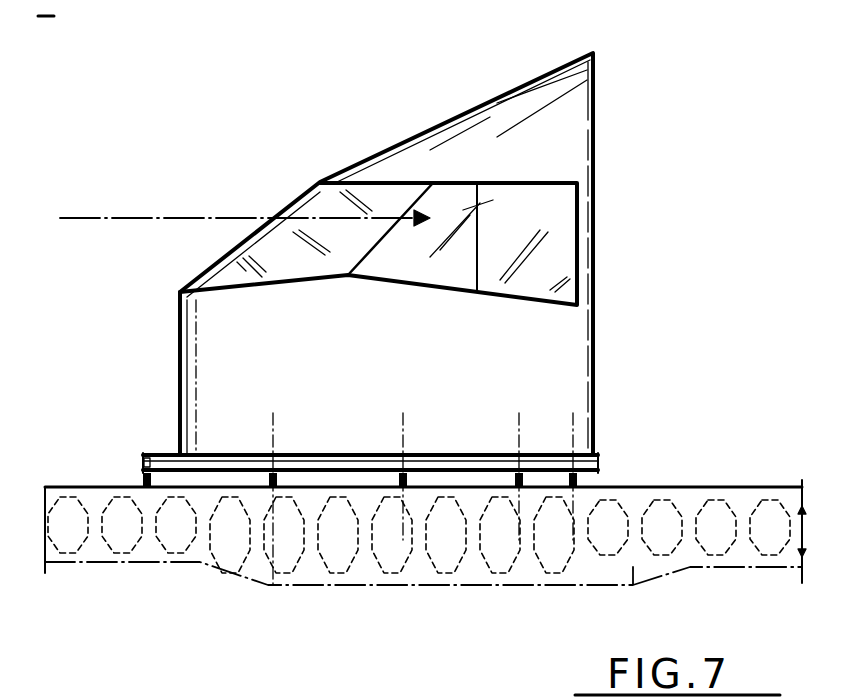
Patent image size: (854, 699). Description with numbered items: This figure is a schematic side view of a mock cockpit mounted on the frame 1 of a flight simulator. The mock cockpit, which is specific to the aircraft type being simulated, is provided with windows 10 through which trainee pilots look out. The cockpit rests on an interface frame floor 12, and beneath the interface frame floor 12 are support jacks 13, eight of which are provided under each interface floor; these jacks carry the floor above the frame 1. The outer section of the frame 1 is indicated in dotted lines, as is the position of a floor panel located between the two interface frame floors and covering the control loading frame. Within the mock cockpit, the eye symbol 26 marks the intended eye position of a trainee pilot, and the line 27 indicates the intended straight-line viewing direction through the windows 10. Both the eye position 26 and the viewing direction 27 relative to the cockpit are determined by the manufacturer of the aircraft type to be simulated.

The frame 1 is at (312, 565).
The windows 10 is at (295, 247).
The interface frame floor 12 is at (165, 453).
The support jacks 13 is at (147, 485).
The eye symbol 26 is at (428, 212).
The viewing direction line 27 is at (127, 217).